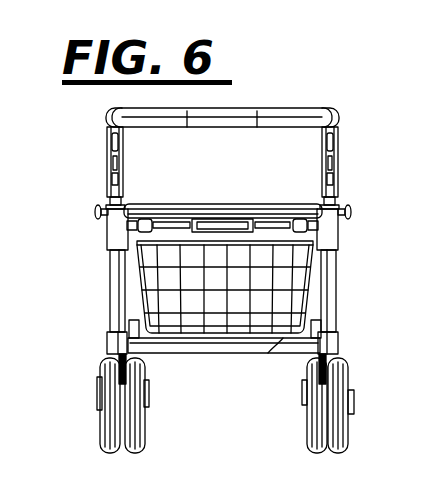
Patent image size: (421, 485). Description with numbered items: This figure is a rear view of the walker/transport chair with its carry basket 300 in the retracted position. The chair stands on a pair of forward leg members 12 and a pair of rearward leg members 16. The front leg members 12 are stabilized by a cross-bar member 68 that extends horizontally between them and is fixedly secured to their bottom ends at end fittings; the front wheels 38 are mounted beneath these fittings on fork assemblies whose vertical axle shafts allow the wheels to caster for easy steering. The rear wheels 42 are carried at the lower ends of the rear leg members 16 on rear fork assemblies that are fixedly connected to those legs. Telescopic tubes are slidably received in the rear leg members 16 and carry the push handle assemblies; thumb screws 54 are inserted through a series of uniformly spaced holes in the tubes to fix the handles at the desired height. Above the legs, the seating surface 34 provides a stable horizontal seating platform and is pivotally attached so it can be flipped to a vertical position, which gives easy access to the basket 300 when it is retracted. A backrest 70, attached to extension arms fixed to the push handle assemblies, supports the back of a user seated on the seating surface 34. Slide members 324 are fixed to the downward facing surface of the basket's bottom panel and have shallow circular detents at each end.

The forward leg member 12 is at (132, 295).
The rearward leg member 16 is at (333, 300).
The seating surface 34 is at (213, 205).
The front wheel 38 is at (310, 430).
The rear wheel 42 is at (348, 430).
The thumb screw 54 is at (354, 213).
The cross-bar member 68 is at (217, 347).
The backrest 70 is at (193, 128).
The basket 300 is at (273, 280).
The slide member 324 is at (282, 344).